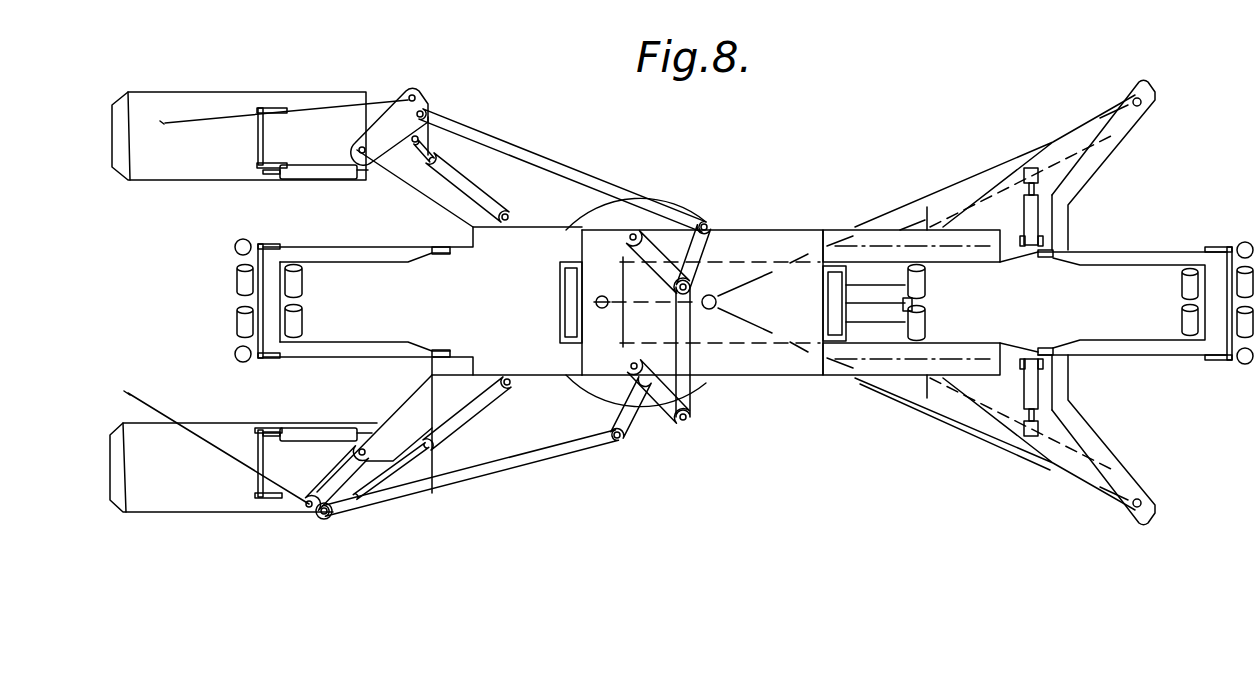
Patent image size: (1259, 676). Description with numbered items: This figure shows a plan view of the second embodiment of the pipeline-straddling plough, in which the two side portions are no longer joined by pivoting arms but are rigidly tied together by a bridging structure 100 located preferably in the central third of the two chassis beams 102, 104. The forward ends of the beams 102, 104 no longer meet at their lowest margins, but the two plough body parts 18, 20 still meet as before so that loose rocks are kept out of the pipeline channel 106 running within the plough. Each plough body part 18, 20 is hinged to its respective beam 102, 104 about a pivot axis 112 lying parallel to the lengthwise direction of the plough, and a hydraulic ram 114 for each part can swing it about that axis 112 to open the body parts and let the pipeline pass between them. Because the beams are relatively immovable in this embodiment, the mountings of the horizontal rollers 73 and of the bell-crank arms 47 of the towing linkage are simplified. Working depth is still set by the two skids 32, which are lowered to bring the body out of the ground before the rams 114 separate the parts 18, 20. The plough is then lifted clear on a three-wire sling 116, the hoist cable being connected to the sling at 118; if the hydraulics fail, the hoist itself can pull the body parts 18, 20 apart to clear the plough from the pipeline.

The plough body part 18 is at (870, 227).
The plough body part 20 is at (913, 402).
The skid 32 is at (195, 171).
The bell-crank 47 is at (677, 245).
The horizontal roller 73 is at (562, 296).
The bridging structure 100 is at (747, 228).
The beam 102 is at (542, 235).
The beam 104 is at (538, 372).
The pipeline channel 106 is at (886, 314).
The pivot axis 112 is at (928, 248).
The hydraulic ram 114 is at (1033, 220).
The three-wire sling 116 is at (997, 165).
The hoist cable connection 118 is at (709, 311).